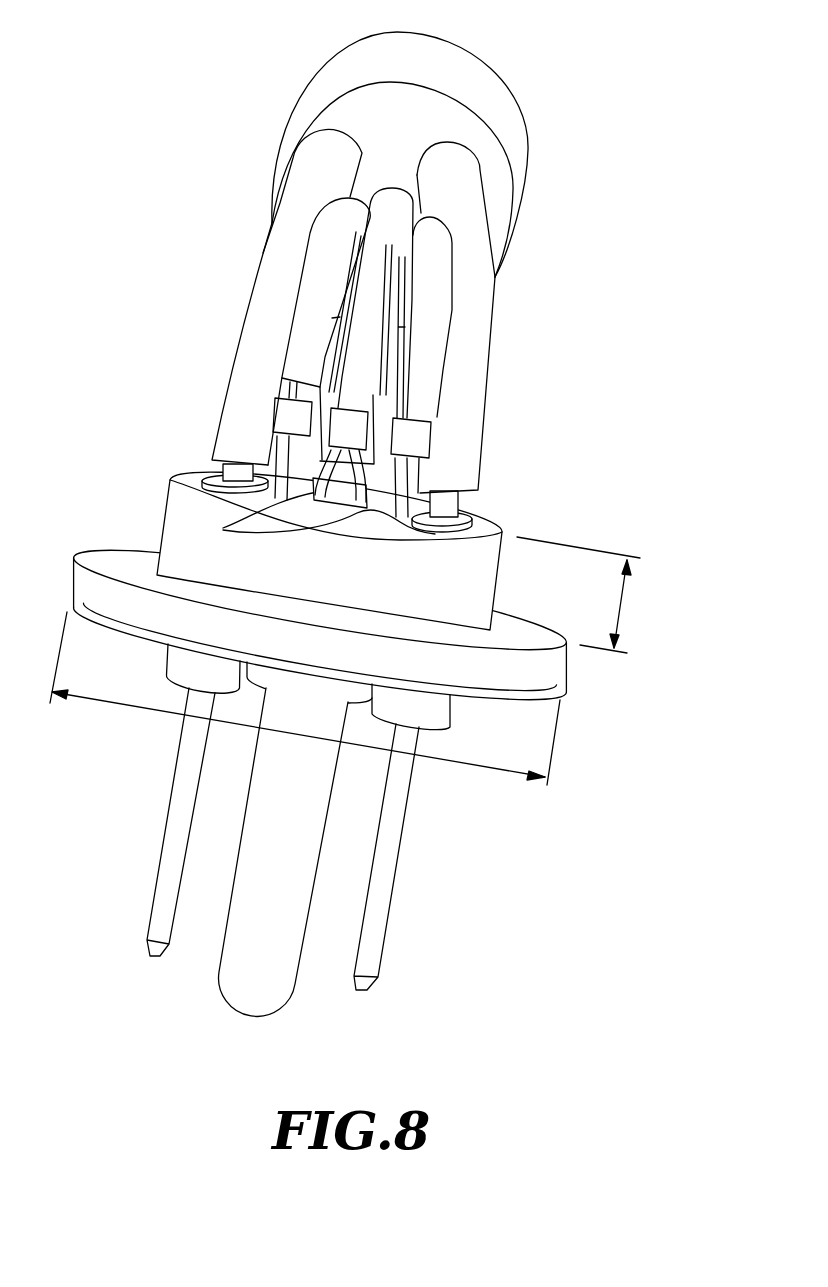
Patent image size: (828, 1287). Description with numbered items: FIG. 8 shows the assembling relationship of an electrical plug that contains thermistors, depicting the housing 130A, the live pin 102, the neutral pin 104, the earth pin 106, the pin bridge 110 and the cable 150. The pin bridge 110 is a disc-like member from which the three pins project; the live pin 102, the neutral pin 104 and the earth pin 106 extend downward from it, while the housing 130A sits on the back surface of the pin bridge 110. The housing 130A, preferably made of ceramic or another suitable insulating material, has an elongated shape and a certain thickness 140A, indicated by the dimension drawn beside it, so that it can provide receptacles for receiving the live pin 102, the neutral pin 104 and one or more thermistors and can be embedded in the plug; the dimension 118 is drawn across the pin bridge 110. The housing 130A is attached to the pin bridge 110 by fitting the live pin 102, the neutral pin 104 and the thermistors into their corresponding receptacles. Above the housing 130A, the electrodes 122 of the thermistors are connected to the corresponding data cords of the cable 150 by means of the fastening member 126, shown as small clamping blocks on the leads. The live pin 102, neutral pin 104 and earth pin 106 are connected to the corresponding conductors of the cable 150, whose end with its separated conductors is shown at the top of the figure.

The live pin 102 is at (152, 927).
The neutral pin 104 is at (377, 923).
The earth pin 106 is at (283, 995).
The pin bridge 110 is at (548, 672).
The flange diameter 118 is at (477, 768).
The electrodes 122 is at (223, 529).
The fastening member 126 is at (393, 436).
The housing 130A is at (483, 590).
The thickness 140A is at (627, 605).
The cable 150 is at (506, 120).